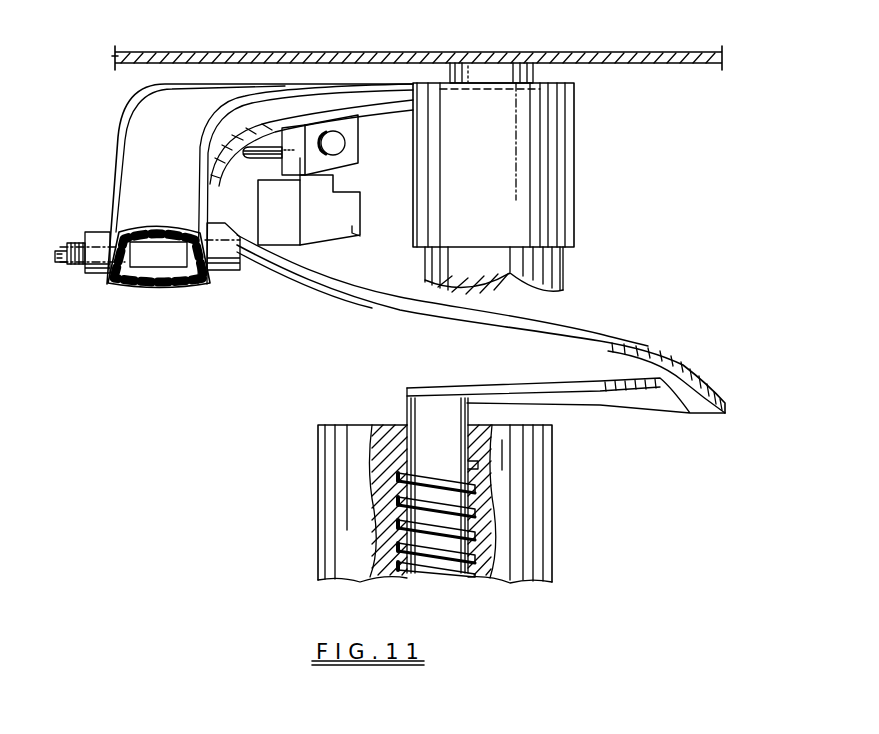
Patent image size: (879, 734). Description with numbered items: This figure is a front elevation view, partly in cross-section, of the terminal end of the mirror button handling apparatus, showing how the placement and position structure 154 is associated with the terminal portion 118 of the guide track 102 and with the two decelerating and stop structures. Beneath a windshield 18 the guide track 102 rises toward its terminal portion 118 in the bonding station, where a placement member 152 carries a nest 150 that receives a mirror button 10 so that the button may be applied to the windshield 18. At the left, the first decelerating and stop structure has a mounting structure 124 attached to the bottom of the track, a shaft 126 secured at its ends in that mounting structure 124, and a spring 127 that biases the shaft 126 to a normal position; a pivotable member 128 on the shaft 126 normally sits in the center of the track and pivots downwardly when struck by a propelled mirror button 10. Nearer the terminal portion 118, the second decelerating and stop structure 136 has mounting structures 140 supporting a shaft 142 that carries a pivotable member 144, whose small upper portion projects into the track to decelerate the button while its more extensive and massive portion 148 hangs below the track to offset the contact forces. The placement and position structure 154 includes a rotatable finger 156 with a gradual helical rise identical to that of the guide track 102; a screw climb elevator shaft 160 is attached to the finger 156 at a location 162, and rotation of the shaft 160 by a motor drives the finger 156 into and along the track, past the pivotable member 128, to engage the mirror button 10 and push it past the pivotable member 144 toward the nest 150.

The mirror button 10 is at (498, 74).
The windshield 18 is at (664, 62).
The guide track 102 is at (127, 173).
The terminal portion 118 is at (391, 101).
The mounting structure 124 is at (97, 273).
The shaft 126 is at (58, 247).
The spring 127 is at (75, 263).
The pivotable member 128 is at (183, 221).
The second decelerating and stop structure 136 is at (335, 242).
The mounting structure 140 is at (213, 173).
The shaft 142 is at (268, 152).
The pivotable member 144 is at (316, 190).
The more extensive and massive portion 148 is at (352, 229).
The nest 150 is at (540, 84).
The placement member 152 is at (560, 184).
The placement and position structure 154 is at (425, 332).
The rotatable finger 156 is at (347, 300).
The screw climb elevator shaft 160 is at (438, 570).
The location 162 is at (435, 388).